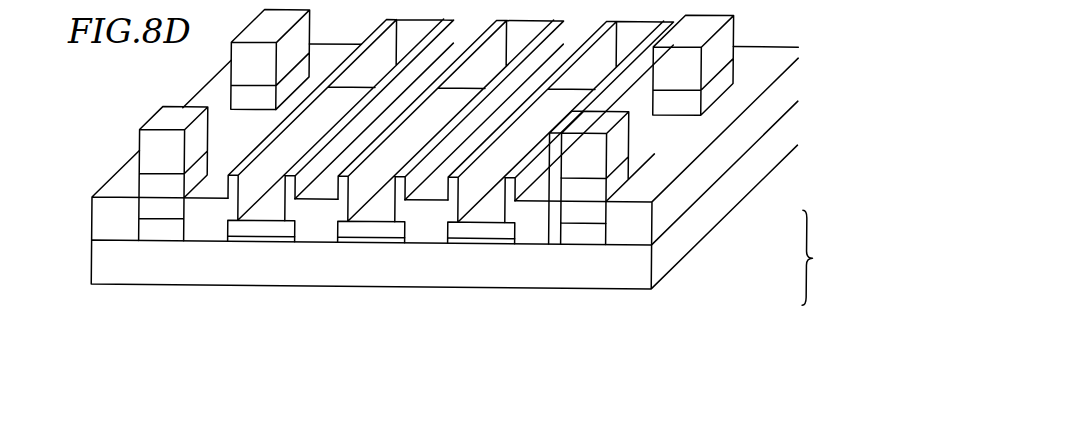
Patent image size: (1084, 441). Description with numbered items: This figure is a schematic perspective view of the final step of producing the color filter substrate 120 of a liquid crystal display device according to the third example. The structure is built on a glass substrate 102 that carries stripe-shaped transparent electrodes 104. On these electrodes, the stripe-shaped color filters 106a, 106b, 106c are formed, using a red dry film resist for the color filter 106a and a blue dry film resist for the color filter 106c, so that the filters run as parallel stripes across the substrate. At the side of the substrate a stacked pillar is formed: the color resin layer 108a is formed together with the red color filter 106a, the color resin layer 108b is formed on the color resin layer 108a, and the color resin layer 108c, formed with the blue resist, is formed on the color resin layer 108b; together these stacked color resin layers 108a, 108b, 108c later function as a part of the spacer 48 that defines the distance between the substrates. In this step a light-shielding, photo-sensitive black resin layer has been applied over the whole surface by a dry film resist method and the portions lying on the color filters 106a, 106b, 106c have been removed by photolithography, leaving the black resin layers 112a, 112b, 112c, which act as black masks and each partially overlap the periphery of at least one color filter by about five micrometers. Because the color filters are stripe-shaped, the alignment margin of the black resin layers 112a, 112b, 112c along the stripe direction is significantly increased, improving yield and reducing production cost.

The spacer 48 is at (550, 186).
The glass substrate 102 is at (637, 267).
The transparent electrodes 104 is at (240, 234).
The color filter 106a is at (270, 228).
The color filter 106b is at (380, 228).
The color filter 106c is at (490, 228).
The color resin layer 108a is at (570, 229).
The color resin layer 108b is at (583, 208).
The color resin layer 108c is at (593, 186).
The black resin layer 112a is at (428, 222).
The black resin layer 112b is at (537, 230).
The black resin layer 112c is at (597, 143).
The color filter substrate 120 is at (831, 257).